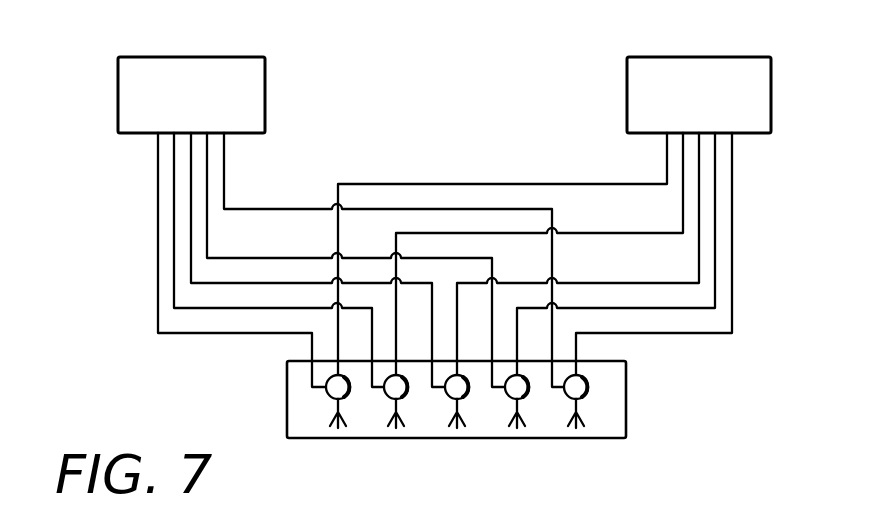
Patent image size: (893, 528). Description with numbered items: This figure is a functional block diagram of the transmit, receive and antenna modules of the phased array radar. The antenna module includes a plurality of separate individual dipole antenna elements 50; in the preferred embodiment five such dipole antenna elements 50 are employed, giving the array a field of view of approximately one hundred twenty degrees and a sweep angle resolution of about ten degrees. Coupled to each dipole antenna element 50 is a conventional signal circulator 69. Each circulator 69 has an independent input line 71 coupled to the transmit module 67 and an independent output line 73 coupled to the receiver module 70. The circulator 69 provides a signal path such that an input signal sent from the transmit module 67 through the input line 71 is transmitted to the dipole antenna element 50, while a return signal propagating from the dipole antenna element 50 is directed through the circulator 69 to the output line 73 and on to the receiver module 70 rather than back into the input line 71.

The receiver module 70 is at (170, 56).
The transmit module 67 is at (697, 56).
The output line 73 is at (158, 210).
The input line 71 is at (530, 184).
The signal circulator 69 is at (329, 396).
The dipole antenna element 50 is at (338, 428).